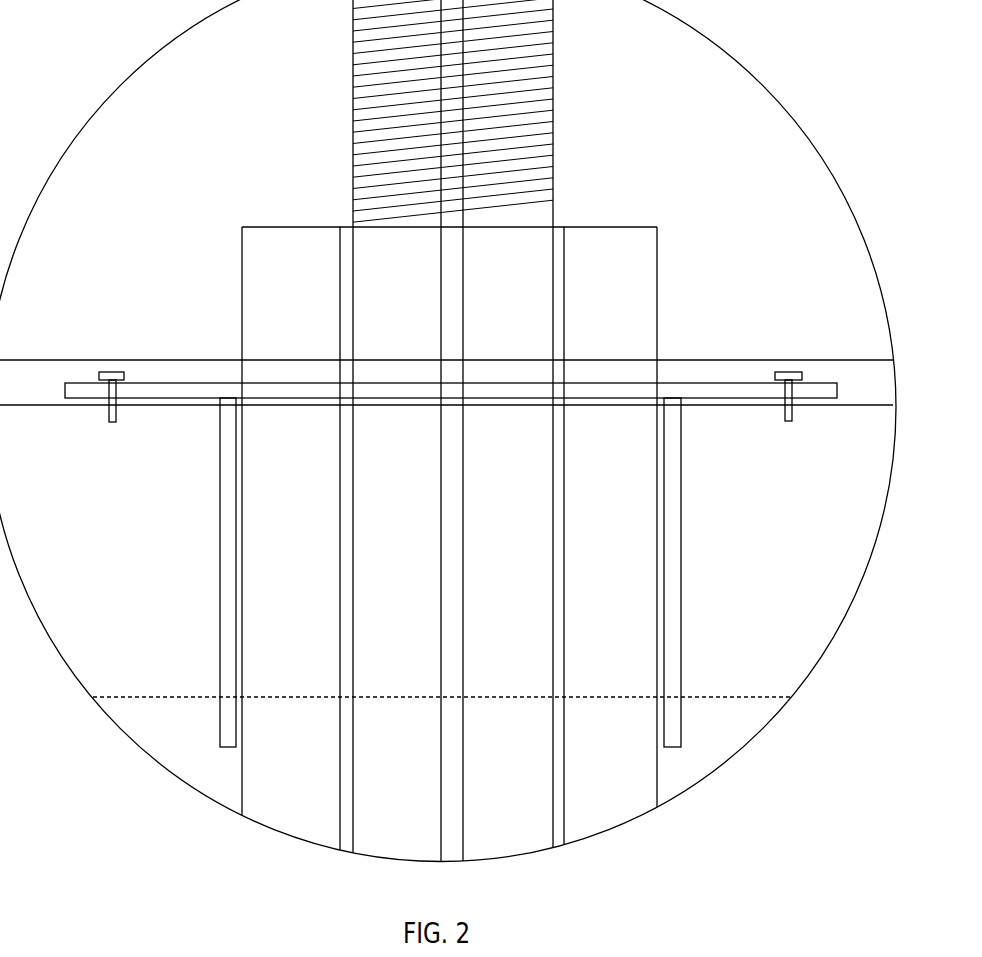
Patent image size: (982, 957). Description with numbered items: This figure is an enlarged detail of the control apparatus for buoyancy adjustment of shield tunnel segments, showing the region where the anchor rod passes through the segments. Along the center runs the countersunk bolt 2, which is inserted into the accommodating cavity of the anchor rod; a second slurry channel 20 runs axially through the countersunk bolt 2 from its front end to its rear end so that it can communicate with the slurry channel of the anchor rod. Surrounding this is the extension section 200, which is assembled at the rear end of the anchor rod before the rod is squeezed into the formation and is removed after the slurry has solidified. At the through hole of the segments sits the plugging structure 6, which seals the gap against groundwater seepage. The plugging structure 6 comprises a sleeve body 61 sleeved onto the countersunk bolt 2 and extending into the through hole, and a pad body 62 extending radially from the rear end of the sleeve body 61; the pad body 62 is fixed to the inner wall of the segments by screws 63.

The countersunk bolt 2 is at (553, 82).
The second slurry channel 20 is at (452, 627).
The extension section 200 is at (288, 255).
The plugging structure 6 is at (485, 415).
The sleeve body 61 is at (674, 522).
The pad body 62 is at (704, 390).
The screws 63 is at (112, 372).